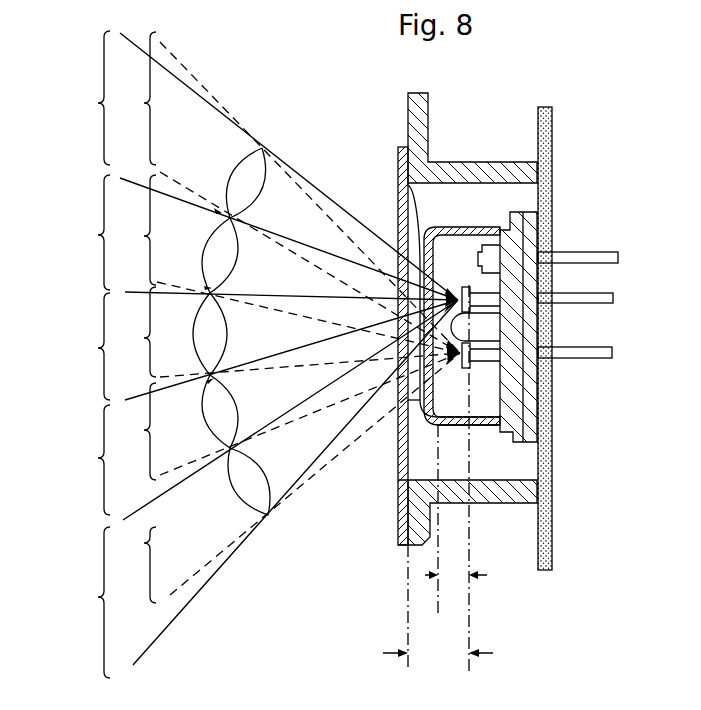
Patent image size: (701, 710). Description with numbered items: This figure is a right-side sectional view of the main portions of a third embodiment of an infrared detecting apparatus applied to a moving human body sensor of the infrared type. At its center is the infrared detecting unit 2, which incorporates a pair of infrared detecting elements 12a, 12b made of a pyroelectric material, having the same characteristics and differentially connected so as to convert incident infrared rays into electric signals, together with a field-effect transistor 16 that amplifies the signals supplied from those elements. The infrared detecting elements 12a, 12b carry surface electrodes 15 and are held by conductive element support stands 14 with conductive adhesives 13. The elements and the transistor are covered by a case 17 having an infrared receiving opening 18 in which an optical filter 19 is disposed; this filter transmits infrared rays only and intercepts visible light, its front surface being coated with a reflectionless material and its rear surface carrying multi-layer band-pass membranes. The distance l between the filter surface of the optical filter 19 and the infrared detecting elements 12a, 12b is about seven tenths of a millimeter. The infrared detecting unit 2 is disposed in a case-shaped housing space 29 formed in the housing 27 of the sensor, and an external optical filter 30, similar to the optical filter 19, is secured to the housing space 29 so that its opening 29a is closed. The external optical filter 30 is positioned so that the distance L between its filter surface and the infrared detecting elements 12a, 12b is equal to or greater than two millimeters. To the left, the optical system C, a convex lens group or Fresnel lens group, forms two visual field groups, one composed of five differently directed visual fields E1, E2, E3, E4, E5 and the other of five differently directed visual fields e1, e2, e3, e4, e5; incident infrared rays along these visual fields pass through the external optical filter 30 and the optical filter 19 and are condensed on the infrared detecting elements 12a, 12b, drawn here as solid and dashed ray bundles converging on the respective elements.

The infrared detecting unit 2 is at (482, 426).
The infrared detecting element 12a is at (525, 282).
The infrared detecting element 12b is at (538, 358).
The conductive adhesive 13 is at (545, 252).
The conductive element support stand 14 is at (538, 305).
The surface electrode 15 is at (462, 287).
The field-effect transistor 16 is at (487, 244).
The case 17 is at (458, 230).
The infrared receiving opening 18 is at (398, 183).
The optical filter 19 is at (390, 425).
The housing 27 is at (407, 95).
The housing space 29 is at (514, 464).
The opening 29a is at (398, 482).
The external optical filter 30 is at (397, 206).
The optical system C is at (243, 173).
The distance L is at (438, 655).
The distance l is at (456, 576).
The visual field E1 is at (82, 98).
The visual field E2 is at (80, 232).
The visual field E3 is at (81, 346).
The visual field E4 is at (82, 460).
The visual field E5 is at (79, 602).
The visual field e1 is at (134, 98).
The visual field e2 is at (134, 230).
The visual field e3 is at (134, 332).
The visual field e4 is at (134, 431).
The visual field e5 is at (134, 565).